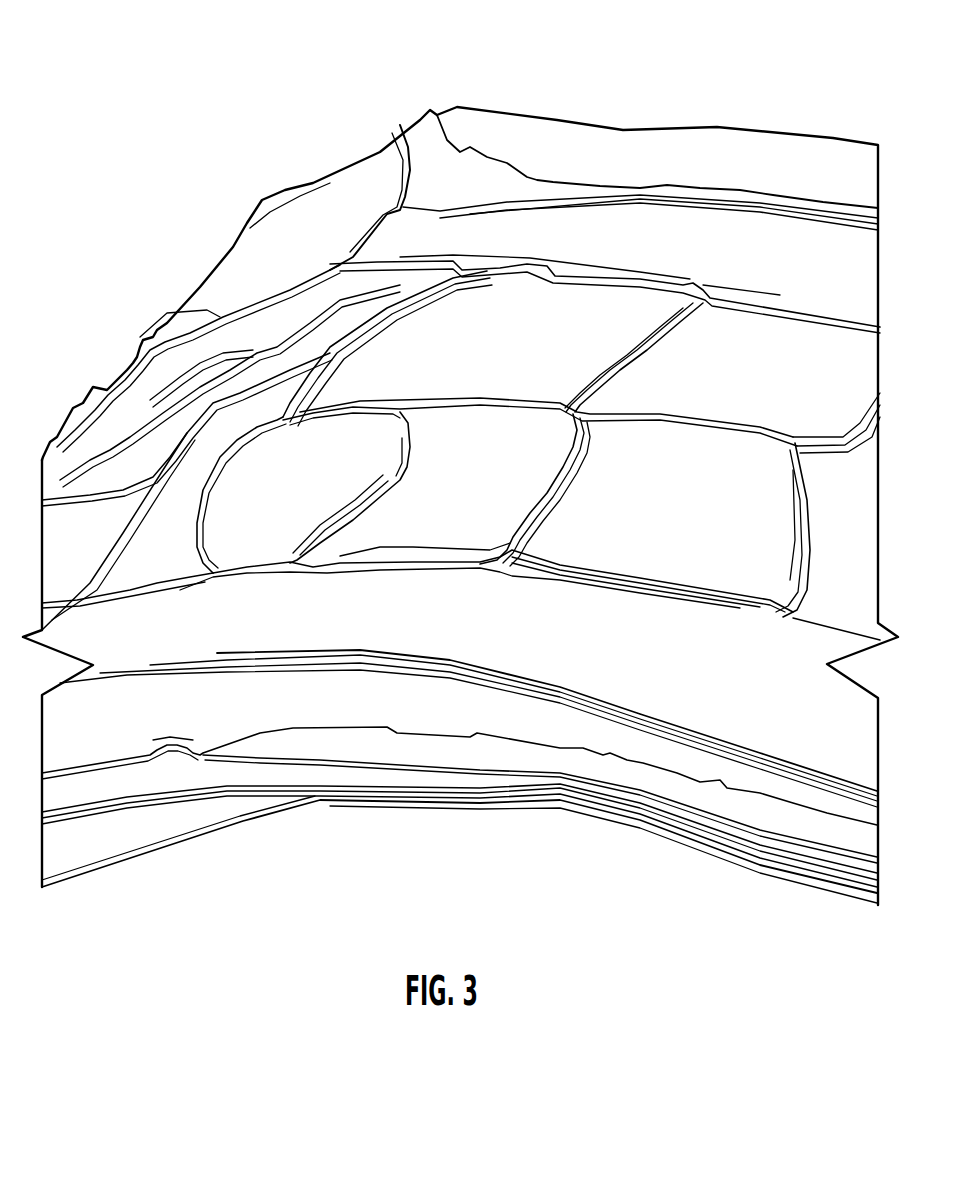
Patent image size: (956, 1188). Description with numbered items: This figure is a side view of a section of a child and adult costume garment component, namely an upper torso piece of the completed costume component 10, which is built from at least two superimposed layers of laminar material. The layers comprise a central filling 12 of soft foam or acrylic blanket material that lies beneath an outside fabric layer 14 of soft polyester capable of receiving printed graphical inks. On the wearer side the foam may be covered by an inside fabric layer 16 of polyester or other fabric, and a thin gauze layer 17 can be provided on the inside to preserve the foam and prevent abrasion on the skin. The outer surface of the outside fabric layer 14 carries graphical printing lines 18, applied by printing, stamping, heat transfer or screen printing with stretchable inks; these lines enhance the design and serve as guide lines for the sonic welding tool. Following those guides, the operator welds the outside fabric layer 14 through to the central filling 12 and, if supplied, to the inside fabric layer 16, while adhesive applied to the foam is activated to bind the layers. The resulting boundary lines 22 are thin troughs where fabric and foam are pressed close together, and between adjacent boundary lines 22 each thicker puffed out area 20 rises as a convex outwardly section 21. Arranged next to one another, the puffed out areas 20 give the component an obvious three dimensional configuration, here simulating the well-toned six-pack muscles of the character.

The costume component 10 is at (352, 177).
The central filling 12 is at (480, 757).
The outside fabric layer 14 is at (687, 699).
The inside fabric layer 16 is at (177, 827).
The thin gauze layer 17 is at (250, 827).
The graphical printing lines 18 is at (523, 270).
The puffed out area 20 is at (602, 300).
The convex outwardly section 21 is at (551, 375).
The boundary lines 22 is at (513, 337).